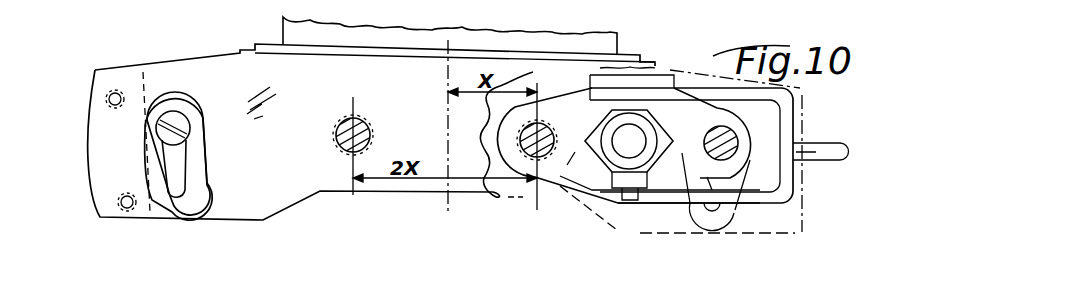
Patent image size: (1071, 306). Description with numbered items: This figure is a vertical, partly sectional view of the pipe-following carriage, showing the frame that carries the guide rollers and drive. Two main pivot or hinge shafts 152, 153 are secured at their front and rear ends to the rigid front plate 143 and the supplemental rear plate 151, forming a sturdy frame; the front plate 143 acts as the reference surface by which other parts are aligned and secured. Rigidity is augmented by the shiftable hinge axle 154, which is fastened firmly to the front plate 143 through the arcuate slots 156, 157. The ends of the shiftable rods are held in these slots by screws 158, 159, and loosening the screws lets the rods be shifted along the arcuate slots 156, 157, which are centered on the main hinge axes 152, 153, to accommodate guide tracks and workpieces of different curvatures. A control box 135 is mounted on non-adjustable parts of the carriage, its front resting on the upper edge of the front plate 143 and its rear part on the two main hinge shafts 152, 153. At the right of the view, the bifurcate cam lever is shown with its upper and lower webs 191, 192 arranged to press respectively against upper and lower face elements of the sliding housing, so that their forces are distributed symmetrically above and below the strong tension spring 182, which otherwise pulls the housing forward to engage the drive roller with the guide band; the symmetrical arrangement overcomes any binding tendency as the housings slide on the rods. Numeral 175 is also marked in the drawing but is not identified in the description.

The control box 135 is at (617, 42).
The front plate 143 is at (200, 58).
The rear plate 151 is at (133, 160).
The main hinge shaft 152 is at (550, 130).
The main hinge shaft 153 is at (364, 118).
The shiftable hinge axle 154 is at (738, 143).
The arcuate slot 156 is at (177, 160).
The arcuate slot 157 is at (730, 217).
The tension spring 182 is at (652, 125).
The upper web 191 is at (802, 102).
The lower web 192 is at (647, 197).
The screw 159 is at (191, 5).
The blade guard 175 is at (653, 5).
The screw 158 is at (775, 5).